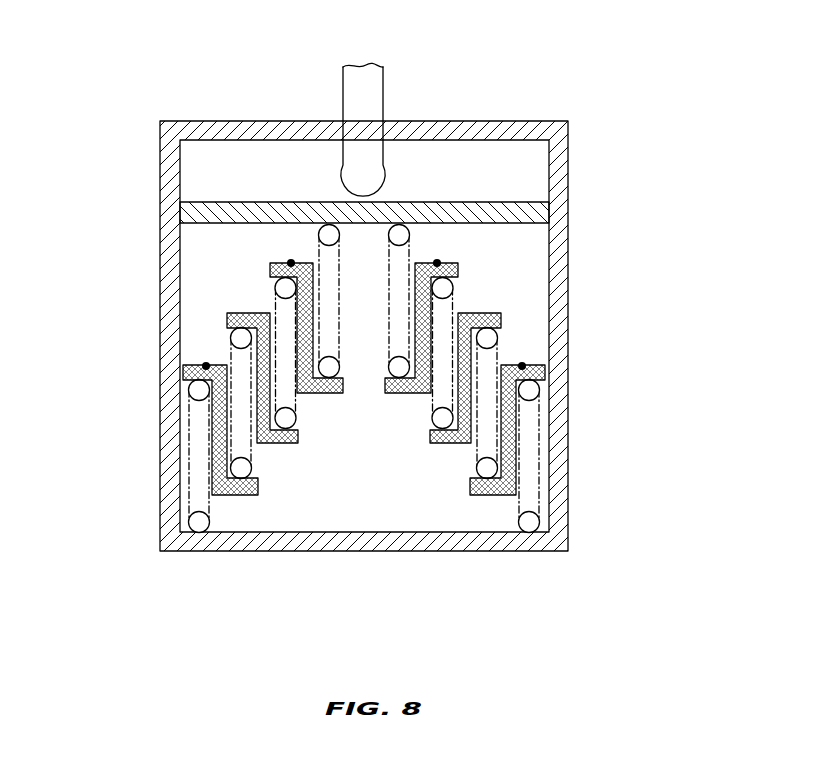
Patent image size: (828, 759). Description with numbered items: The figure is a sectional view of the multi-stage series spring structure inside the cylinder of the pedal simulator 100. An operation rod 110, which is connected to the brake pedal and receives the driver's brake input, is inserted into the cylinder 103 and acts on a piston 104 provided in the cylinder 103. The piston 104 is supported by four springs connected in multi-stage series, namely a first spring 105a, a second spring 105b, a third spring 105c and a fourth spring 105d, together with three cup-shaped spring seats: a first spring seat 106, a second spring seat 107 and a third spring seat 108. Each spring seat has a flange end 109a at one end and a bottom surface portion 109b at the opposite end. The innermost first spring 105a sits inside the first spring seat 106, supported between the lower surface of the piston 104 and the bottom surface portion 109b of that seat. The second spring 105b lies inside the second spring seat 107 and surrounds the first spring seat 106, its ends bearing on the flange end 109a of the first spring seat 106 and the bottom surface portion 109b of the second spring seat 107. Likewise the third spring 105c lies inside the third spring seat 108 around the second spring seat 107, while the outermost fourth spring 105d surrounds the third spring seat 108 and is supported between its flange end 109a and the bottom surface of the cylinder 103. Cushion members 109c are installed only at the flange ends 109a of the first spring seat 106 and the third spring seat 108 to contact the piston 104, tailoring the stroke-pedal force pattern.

The pedal simulator 100 is at (568, 106).
The cylinder 103 is at (570, 427).
The piston 104 is at (507, 203).
The first spring 105a is at (411, 250).
The second spring 105b is at (455, 302).
The third spring 105c is at (498, 348).
The fourth spring 105d is at (539, 499).
The first spring seat 106 is at (316, 340).
The second spring seat 107 is at (258, 404).
The third spring seat 108 is at (232, 466).
The flange end 109a is at (190, 364).
The bottom surface portion 109b is at (258, 493).
The cushion member 109c is at (290, 261).
The operation rod 110 is at (385, 93).